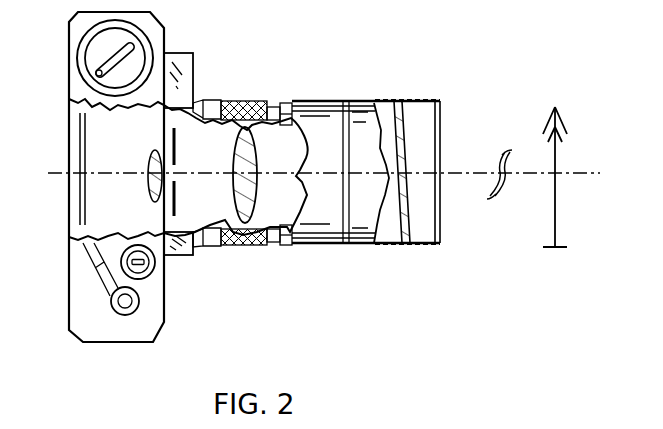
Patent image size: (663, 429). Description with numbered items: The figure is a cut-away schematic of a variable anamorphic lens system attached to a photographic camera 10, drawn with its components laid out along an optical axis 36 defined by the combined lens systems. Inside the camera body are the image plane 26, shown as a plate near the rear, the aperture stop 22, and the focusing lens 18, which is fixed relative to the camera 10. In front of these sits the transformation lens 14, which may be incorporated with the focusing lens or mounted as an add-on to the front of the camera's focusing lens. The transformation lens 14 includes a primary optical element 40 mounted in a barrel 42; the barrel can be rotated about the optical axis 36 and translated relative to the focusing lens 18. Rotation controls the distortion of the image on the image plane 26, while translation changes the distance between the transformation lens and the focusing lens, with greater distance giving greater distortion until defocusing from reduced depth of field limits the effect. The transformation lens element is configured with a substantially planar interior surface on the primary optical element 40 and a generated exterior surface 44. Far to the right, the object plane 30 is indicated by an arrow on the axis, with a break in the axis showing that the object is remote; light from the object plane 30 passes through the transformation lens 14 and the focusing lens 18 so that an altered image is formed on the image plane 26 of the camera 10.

The camera 10 is at (72, 64).
The transformation lens 14 is at (398, 160).
The focusing lens 18 is at (254, 183).
The aperture stop 22 is at (175, 168).
The image plane 26 is at (86, 168).
The object plane 30 is at (556, 238).
The optical axis 36 is at (548, 173).
The primary optical element 40 is at (393, 218).
The barrel 42 is at (374, 238).
The generated exterior surface 44 is at (405, 240).